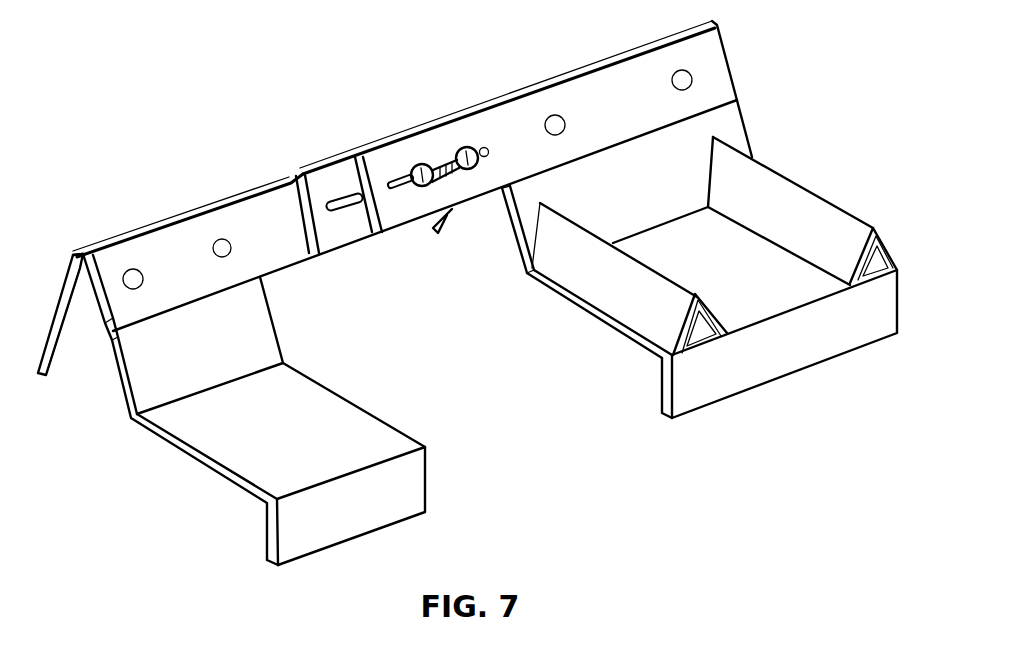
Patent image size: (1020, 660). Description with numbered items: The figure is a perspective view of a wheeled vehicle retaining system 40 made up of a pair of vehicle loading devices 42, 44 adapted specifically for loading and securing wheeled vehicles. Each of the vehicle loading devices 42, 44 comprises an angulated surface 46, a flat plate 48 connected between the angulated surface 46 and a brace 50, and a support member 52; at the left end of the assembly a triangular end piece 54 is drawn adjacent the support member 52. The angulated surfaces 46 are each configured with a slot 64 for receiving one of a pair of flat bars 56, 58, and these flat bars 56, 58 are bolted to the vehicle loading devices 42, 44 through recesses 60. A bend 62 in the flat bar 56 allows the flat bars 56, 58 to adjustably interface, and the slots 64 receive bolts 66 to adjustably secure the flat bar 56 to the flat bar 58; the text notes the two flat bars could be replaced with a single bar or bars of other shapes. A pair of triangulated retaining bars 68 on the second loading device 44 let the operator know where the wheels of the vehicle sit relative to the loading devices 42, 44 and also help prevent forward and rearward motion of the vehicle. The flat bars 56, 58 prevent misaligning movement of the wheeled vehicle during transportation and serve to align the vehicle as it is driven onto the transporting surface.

The wheeled vehicle retaining system 40 is at (190, 160).
The vehicle loading device 42 is at (165, 507).
The vehicle loading device 44 is at (592, 342).
The angulated surface 46 is at (232, 328).
The flat plate 48 is at (332, 430).
The brace 50 is at (400, 487).
The support member 52 is at (78, 345).
The triangular end flange 54 is at (90, 296).
The flat bar 56 is at (250, 222).
The flat bar 58 is at (612, 90).
The recess 60 is at (132, 268).
The bend 62 is at (313, 207).
The slot 64 is at (478, 148).
The bolt 66 is at (423, 166).
The triangulated retaining bar 68 is at (845, 233).